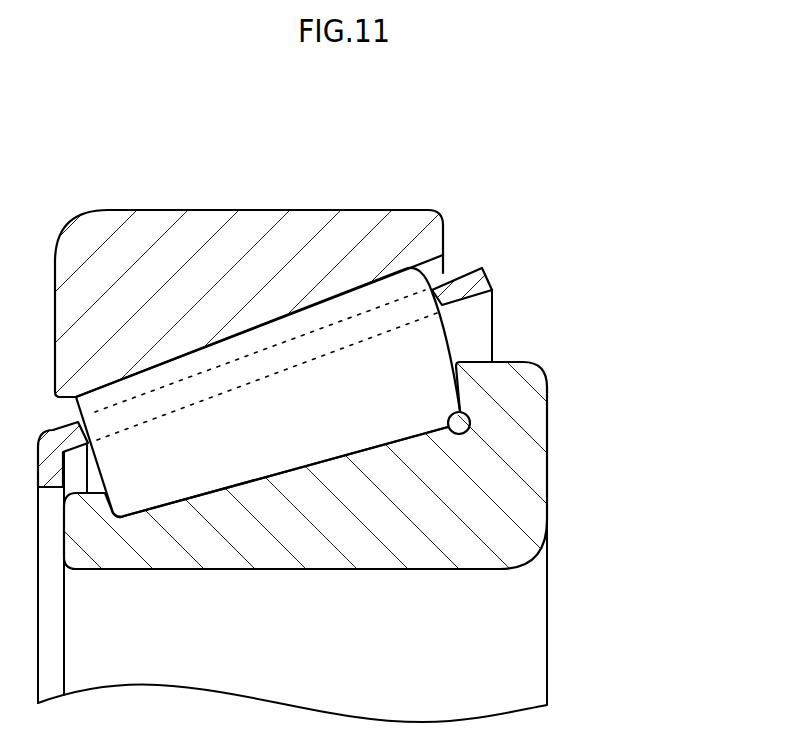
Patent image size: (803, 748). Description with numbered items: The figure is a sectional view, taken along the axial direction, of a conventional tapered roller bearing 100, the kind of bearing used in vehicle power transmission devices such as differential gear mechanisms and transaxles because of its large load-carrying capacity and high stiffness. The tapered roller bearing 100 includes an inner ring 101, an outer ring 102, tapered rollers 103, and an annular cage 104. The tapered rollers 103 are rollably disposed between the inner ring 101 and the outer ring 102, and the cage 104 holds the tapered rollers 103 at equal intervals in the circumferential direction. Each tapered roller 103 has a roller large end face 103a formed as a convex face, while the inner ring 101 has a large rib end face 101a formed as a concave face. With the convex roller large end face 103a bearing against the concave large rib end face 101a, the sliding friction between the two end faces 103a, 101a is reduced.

The tapered roller bearing 100 is at (357, 406).
The inner ring 101 is at (357, 500).
The large rib end face 101a is at (463, 403).
The outer ring 102 is at (204, 198).
The tapered roller 103 is at (333, 458).
The roller large end face 103a is at (445, 342).
The cage 104 is at (307, 368).